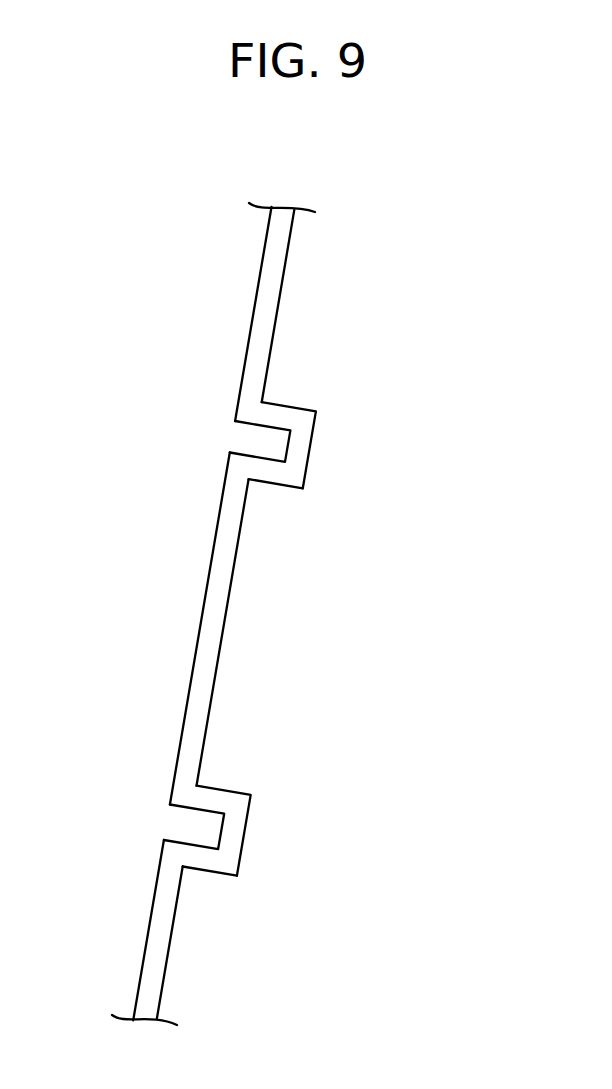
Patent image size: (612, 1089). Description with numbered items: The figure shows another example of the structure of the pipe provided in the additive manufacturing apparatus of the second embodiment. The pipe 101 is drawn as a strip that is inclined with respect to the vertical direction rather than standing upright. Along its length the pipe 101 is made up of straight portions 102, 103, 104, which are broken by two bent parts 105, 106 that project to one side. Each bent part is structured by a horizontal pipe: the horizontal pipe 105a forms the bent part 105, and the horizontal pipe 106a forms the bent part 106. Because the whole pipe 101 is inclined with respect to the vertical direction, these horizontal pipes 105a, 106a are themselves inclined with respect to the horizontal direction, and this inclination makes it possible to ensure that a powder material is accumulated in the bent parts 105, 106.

The pipe 101 is at (392, 198).
The first plate portion 102 is at (258, 291).
The second plate portion 103 is at (199, 627).
The third plate portion 104 is at (150, 918).
The bent part 105 is at (317, 392).
The horizontal pipe 105a is at (272, 488).
The bent part 106 is at (255, 768).
The horizontal pipe 106a is at (205, 874).